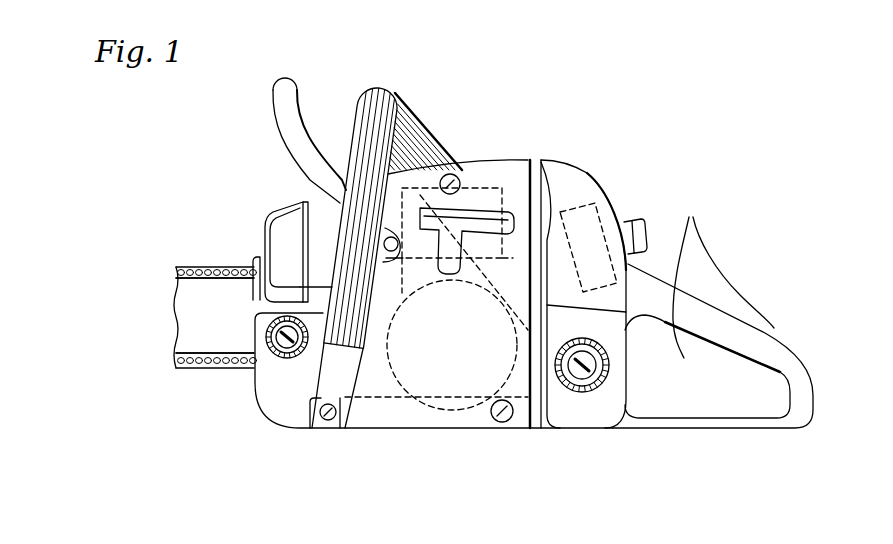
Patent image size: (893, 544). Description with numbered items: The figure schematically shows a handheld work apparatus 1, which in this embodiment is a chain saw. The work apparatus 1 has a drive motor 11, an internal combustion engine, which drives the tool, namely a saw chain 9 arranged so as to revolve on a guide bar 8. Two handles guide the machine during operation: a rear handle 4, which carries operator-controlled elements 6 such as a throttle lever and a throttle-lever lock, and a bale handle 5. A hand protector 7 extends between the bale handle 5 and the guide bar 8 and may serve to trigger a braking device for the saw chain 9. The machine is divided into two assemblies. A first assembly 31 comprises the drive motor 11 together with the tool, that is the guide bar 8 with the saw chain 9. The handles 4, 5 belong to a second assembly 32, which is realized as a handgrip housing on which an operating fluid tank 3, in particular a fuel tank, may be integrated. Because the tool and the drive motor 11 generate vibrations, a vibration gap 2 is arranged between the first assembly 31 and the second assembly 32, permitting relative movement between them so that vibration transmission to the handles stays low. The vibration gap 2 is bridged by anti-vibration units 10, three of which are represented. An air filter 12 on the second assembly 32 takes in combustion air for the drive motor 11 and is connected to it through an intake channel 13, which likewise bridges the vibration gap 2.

The handheld work apparatus 1 is at (682, 101).
The vibration gap 2 is at (532, 156).
The operating fluid tank 3 is at (597, 415).
The rear handle 4 is at (733, 338).
The bale handle 5 is at (393, 92).
The operator-controlled elements 6 is at (723, 275).
The hand protector 7 is at (285, 95).
The guide bar 8 is at (223, 300).
The saw chain 9 is at (187, 268).
The anti-vibration units 10 is at (452, 176).
The drive motor 11 is at (393, 375).
The air filter 12 is at (603, 185).
The intake channel 13 is at (555, 215).
The first assembly 31 is at (507, 173).
The second assembly 32 is at (538, 430).